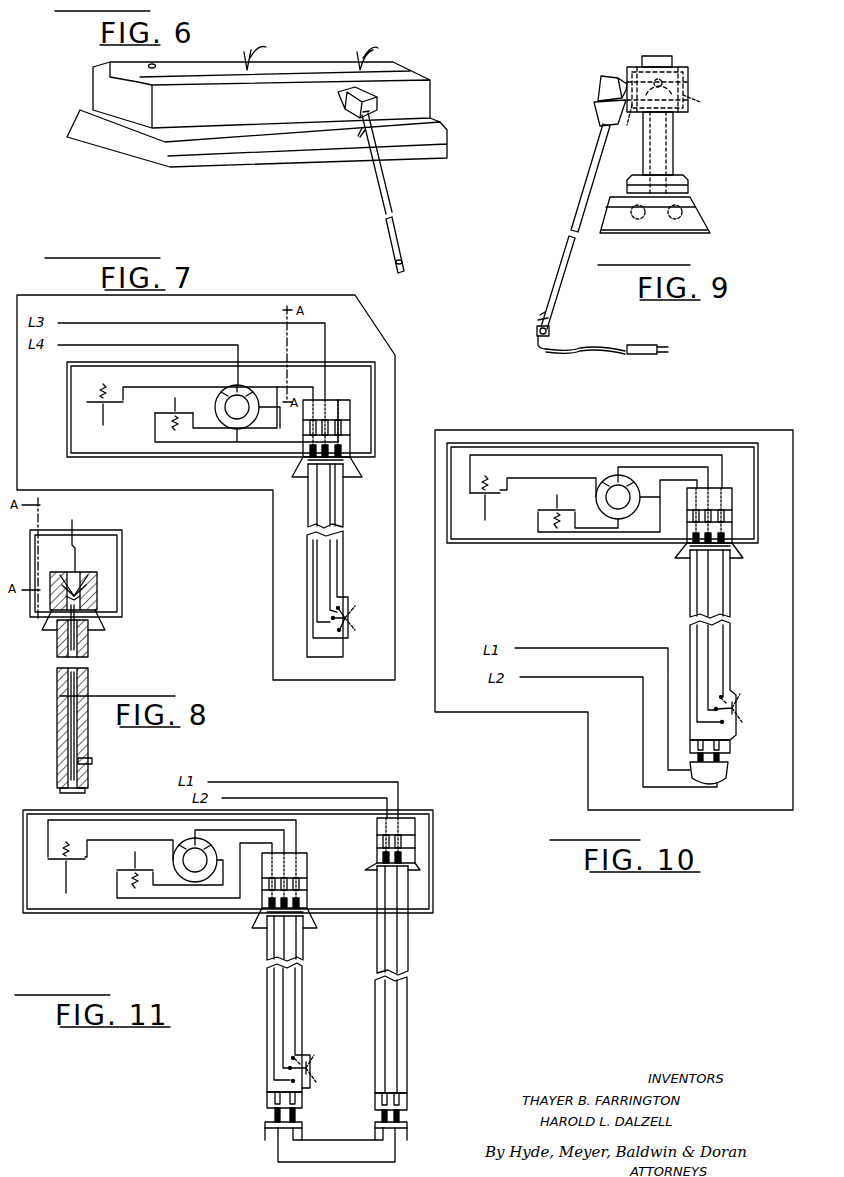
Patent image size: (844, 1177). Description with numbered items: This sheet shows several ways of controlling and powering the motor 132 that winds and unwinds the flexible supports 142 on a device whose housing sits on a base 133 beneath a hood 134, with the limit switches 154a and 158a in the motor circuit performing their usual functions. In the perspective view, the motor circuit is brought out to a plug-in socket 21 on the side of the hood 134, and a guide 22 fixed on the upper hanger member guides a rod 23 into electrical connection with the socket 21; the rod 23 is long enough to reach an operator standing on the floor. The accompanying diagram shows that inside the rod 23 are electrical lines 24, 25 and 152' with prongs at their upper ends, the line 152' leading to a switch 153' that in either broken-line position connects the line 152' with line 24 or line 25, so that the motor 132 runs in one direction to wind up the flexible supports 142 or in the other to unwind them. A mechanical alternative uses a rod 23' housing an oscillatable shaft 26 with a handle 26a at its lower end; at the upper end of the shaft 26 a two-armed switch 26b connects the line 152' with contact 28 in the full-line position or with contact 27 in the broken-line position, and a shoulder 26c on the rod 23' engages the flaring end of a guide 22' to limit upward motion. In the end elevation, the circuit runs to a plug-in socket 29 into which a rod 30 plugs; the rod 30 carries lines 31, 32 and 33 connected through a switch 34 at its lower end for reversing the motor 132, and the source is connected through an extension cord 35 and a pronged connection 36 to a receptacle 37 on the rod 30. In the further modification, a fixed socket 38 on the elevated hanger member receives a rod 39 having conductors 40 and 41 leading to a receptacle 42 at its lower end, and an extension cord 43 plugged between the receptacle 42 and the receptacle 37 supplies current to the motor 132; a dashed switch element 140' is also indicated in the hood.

In FIG. 6, the plug-in socket 21 is at (378, 101).
In FIG. 7, the plug-in socket 21 is at (351, 412).
In FIG. 6, the guide 22 is at (364, 162).
In FIG. 7, the guide 22 is at (340, 467).
In FIG. 6, the rod 23 is at (404, 241).
In FIG. 7, the rod 23 is at (341, 496).
In FIG. 7, the electrical line 24 is at (307, 586).
In FIG. 7, the electrical line 25 is at (338, 576).
In FIG. 8, the oscillatable shaft 26 is at (68, 726).
In FIG. 8, the handle 26a is at (92, 760).
In FIG. 8, the switch 26b is at (88, 590).
In FIG. 8, the shoulder 26c is at (57, 636).
In FIG. 8, the contact 27 is at (58, 590).
In FIG. 8, the contact 28 is at (86, 580).
In FIG. 9, the plug-in socket 29 is at (600, 90).
In FIG. 10, the plug-in socket 29 is at (733, 512).
In FIG. 11, the plug-in socket 29 is at (308, 873).
In FIG. 9, the rod 30 is at (580, 205).
In FIG. 10, the rod 30 is at (731, 583).
In FIG. 11, the rod 30 is at (266, 1000).
In FIG. 10, the electrical line 31 is at (697, 648).
In FIG. 10, the electrical line 32 is at (710, 640).
In FIG. 11, the electrical line 32 is at (285, 998).
In FIG. 10, the electrical line 33 is at (724, 660).
In FIG. 11, the electrical line 33 is at (296, 1020).
In FIG. 9, the switch 34 is at (540, 318).
In FIG. 10, the switch 34 is at (738, 708).
In FIG. 11, the switch 34 is at (310, 1070).
In FIG. 9, the extension cord 35 is at (590, 348).
In FIG. 9, the pronged connection 36 is at (537, 343).
In FIG. 10, the pronged connection 36 is at (729, 776).
In FIG. 9, the receptacle 37 is at (549, 331).
In FIG. 10, the receptacle 37 is at (731, 747).
In FIG. 11, the receptacle 37 is at (266, 1101).
In FIG. 11, the fixed socket 38 is at (416, 840).
In FIG. 11, the rod 39 is at (408, 994).
In FIG. 11, the electrical conductor 40 is at (398, 952).
In FIG. 11, the electrical conductor 41 is at (406, 968).
In FIG. 11, the receptacle 42 is at (408, 1104).
In FIG. 11, the extension cord 43 is at (330, 1160).
In FIG. 9, the motor 132 is at (660, 70).
In FIG. 7, the motor 132 is at (242, 388).
In FIG. 10, the motor 132 is at (619, 519).
In FIG. 11, the motor 132 is at (197, 882).
In FIG. 6, the base 133 is at (440, 145).
In FIG. 9, the base 133 is at (702, 216).
In FIG. 6, the hood 134 is at (432, 98).
In FIG. 9, the hood 134 is at (690, 75).
In FIG. 9, the limit switch 140' is at (671, 118).
In FIG. 9, the flexible supports 142 is at (673, 142).
In FIG. 7, the electrical line 152' is at (346, 580).
In FIG. 8, the electrical line 152' is at (76, 561).
In FIG. 6, the switch 153' is at (416, 250).
In FIG. 7, the switch 153' is at (358, 606).
In FIG. 7, the limit switch 154a is at (106, 405).
In FIG. 10, the limit switch 154a is at (488, 497).
In FIG. 11, the limit switch 154a is at (67, 855).
In FIG. 7, the limit switch 158a is at (177, 411).
In FIG. 10, the limit switch 158a is at (548, 508).
In FIG. 11, the limit switch 158a is at (136, 866).
In FIG. 8, the guide 22' is at (96, 620).
In FIG. 8, the rod 23' is at (105, 669).